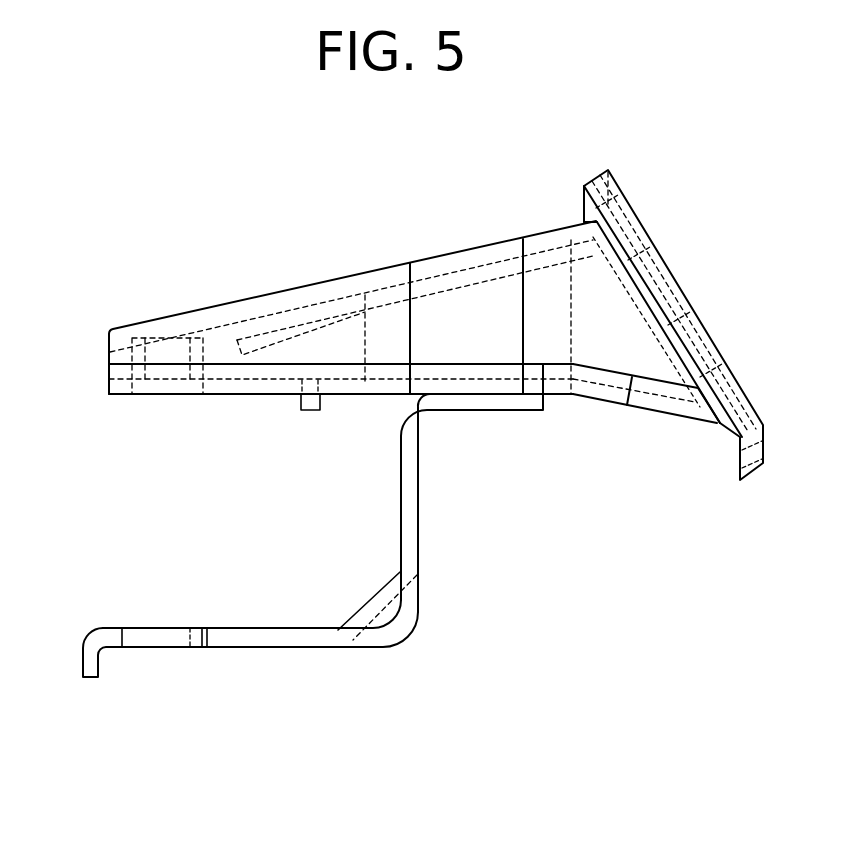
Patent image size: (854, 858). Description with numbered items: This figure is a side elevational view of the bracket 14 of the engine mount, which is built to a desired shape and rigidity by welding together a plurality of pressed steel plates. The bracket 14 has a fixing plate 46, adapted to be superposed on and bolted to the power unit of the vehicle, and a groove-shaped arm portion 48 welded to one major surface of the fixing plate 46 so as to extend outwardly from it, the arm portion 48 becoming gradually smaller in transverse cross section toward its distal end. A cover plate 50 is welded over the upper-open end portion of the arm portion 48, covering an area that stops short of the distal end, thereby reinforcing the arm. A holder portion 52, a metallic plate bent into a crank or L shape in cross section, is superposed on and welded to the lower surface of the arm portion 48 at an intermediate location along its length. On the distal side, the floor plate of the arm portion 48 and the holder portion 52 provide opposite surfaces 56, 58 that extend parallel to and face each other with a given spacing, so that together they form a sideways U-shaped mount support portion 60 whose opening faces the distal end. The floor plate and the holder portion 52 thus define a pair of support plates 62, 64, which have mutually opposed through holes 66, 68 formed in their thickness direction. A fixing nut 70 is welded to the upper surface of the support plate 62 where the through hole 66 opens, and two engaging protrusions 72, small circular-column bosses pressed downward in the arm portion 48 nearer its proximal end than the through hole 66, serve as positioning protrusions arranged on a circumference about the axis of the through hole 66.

The bracket 14 is at (418, 213).
The fixing plate 46 is at (678, 305).
The arm portion 48 is at (588, 390).
The cover plate 50 is at (468, 282).
The holder portion 52 is at (408, 504).
The opposed surface 56 is at (230, 394).
The opposed surface 58 is at (237, 628).
The mount support portion 60 is at (103, 540).
The support plate 62 is at (123, 395).
The support plate 64 is at (280, 638).
The through hole 66 is at (187, 395).
The through hole 68 is at (157, 650).
The fixing nut 70 is at (162, 352).
The engaging protrusion 72 is at (310, 410).